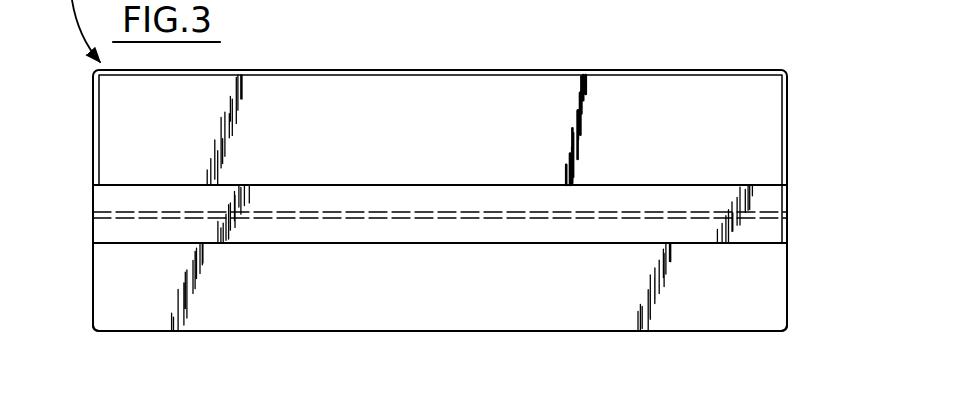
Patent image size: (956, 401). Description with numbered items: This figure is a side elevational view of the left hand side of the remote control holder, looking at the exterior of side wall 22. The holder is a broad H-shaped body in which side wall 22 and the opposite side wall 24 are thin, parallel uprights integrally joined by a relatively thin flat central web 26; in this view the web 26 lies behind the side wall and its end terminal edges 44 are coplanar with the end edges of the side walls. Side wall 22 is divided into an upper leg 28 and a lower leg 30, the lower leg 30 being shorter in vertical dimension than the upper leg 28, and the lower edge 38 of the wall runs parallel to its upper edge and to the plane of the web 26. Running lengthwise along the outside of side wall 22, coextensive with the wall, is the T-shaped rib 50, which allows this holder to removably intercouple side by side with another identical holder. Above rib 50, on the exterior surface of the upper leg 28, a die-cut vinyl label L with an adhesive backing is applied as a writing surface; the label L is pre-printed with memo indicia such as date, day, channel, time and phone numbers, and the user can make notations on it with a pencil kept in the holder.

The upper leg 28 is at (787, 95).
The label L is at (752, 142).
The T-shaped rib 50 is at (777, 199).
The lower leg 30 is at (773, 293).
The side wall 22 is at (692, 296).
The lower edge 38 is at (337, 0).
The central web 26 is at (398, 0).
The end terminal edge of web 44 is at (459, 8).
The side wall 24 is at (545, 3).